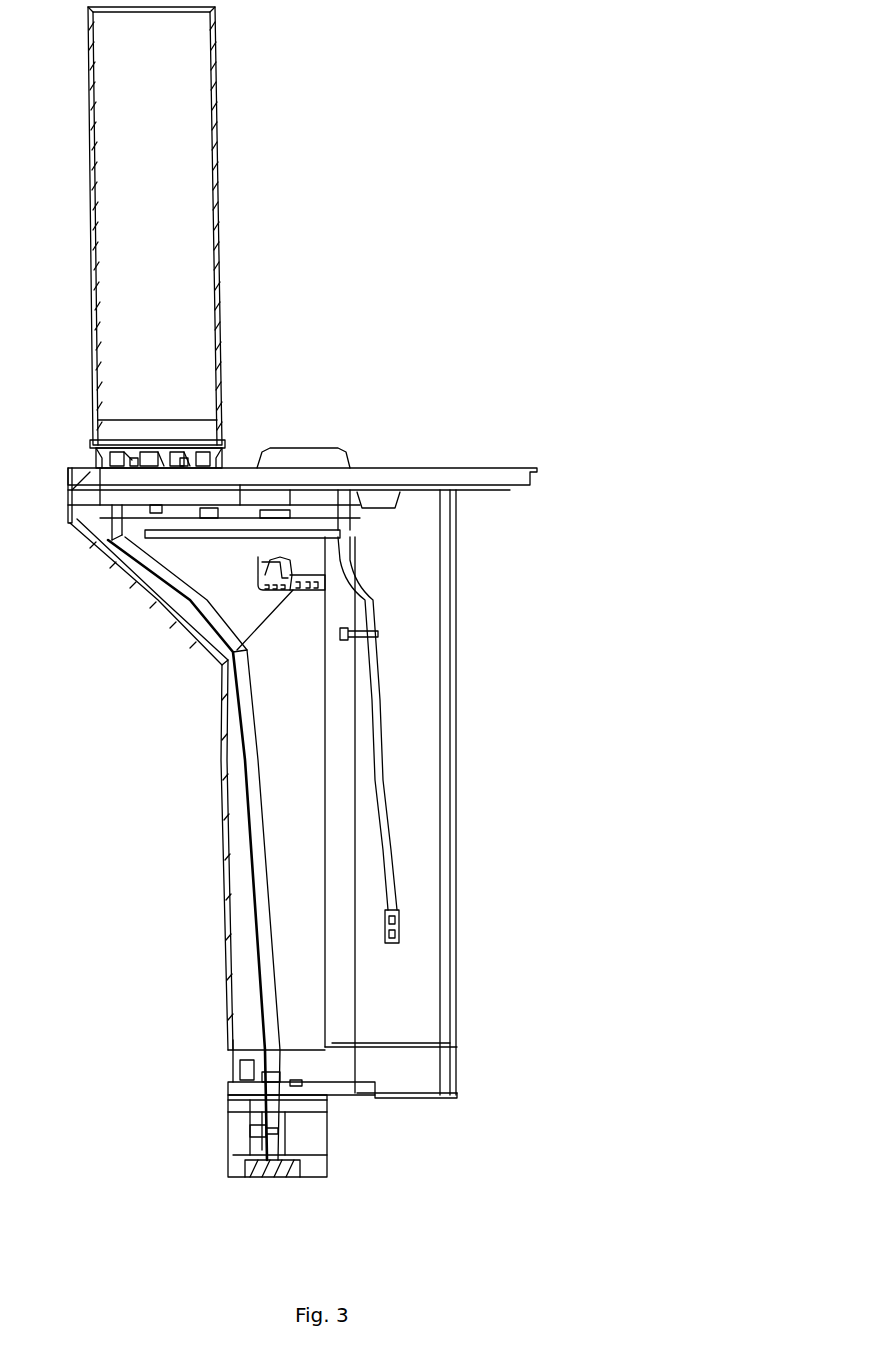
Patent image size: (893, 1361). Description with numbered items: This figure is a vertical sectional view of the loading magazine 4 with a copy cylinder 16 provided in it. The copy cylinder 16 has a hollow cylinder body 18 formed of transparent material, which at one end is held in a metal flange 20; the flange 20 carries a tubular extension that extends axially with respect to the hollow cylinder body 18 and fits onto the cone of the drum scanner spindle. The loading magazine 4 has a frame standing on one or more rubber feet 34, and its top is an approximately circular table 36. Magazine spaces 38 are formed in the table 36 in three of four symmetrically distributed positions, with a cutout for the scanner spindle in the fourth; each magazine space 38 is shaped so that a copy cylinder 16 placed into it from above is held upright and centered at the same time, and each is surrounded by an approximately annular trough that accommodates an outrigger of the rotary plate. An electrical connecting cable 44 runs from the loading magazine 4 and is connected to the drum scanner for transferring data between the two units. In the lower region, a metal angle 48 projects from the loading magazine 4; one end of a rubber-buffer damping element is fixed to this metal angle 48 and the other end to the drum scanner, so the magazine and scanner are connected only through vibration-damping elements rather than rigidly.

The loading magazine 4 is at (157, 608).
The copy cylinder 16 is at (167, 233).
The hollow cylinder body 18 is at (215, 118).
The metal flange 20 is at (228, 435).
The rubber feet 34 is at (280, 1172).
The table 36 is at (395, 463).
The magazine space 38 is at (145, 453).
The electrical connecting cable 44 is at (387, 785).
The metal angle 48 is at (375, 1098).